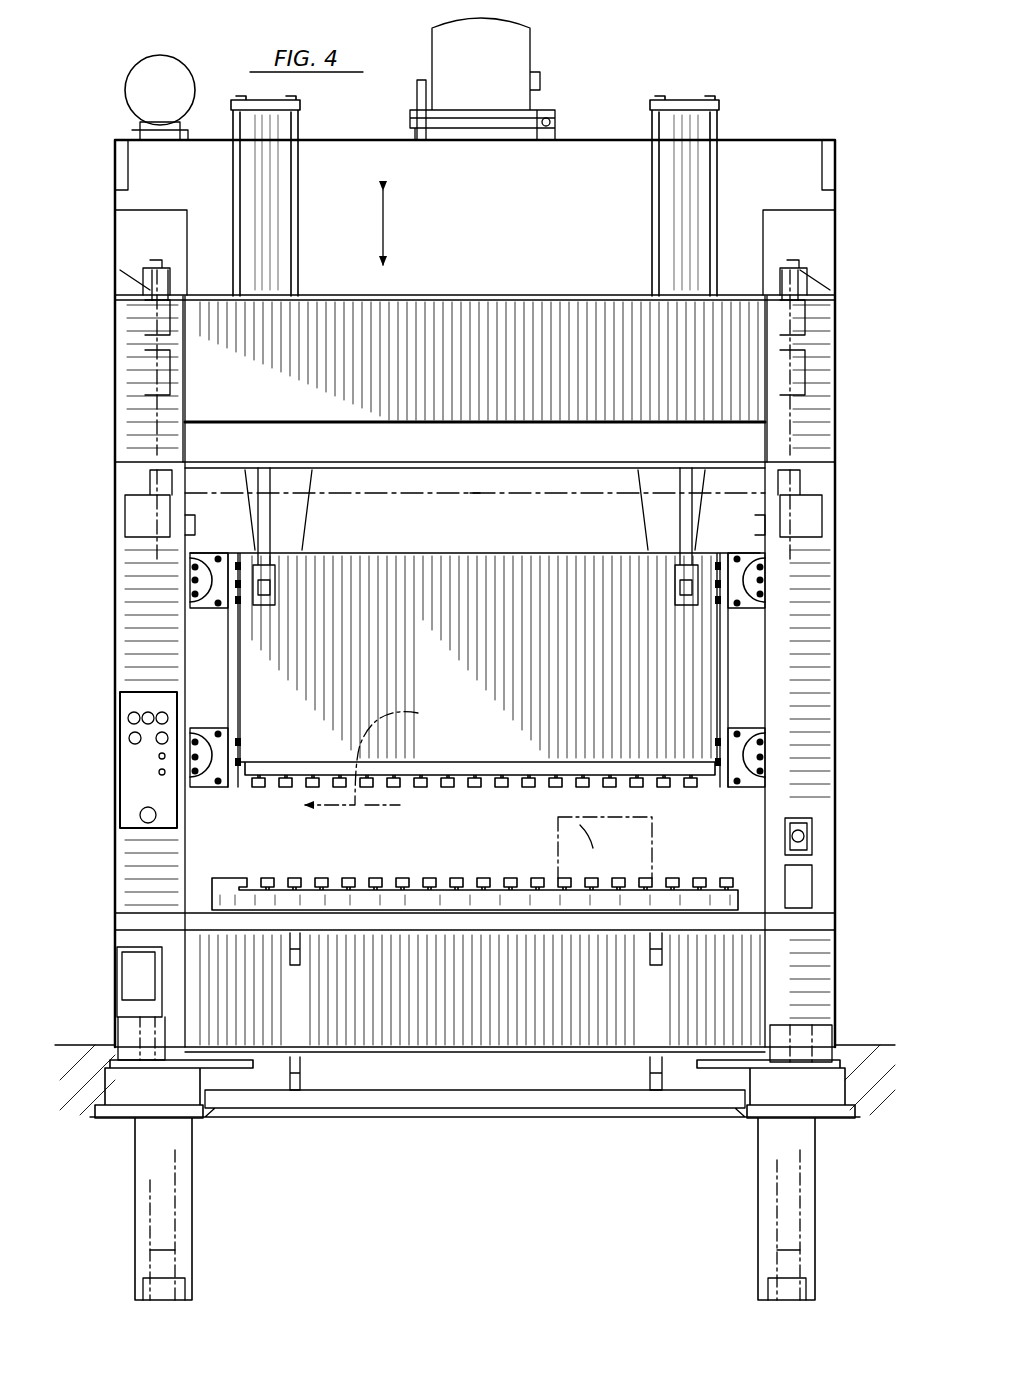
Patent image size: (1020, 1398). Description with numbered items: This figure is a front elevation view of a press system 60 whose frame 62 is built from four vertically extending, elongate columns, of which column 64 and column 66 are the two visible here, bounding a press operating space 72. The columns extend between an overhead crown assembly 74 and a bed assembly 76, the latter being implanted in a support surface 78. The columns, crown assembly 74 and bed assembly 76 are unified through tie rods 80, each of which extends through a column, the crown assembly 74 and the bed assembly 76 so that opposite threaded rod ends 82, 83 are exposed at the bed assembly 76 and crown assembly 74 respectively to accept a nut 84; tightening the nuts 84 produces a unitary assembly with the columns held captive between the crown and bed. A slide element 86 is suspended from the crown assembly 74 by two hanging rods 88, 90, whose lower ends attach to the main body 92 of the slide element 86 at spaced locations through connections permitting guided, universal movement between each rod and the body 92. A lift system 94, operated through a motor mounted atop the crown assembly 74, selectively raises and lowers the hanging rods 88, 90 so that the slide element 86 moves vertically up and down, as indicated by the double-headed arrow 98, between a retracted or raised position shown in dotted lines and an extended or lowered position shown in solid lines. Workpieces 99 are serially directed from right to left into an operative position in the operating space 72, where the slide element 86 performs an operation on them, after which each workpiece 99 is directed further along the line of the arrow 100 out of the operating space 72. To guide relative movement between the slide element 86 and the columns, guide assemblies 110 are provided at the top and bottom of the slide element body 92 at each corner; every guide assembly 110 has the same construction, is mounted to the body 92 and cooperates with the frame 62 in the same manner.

The press system 60 is at (850, 372).
The frame 62 is at (838, 630).
The column 64 is at (130, 612).
The column 66 is at (805, 728).
The press operating space 72 is at (425, 818).
The crown assembly 74 is at (115, 350).
The bed assembly 76 is at (840, 1030).
The support surface 78 is at (65, 1045).
The tie rod 80 is at (165, 265).
The rod end 82 is at (165, 1090).
The rod end 83 is at (150, 282).
The nut 84 is at (138, 265).
The slide element 86 is at (477, 652).
The hanging rod 88 is at (300, 525).
The hanging rod 90 is at (650, 540).
The main body 92 is at (555, 565).
The lift system 94 is at (545, 62).
The double-headed arrow 98 is at (405, 213).
The workpiece 99 is at (560, 818).
The arrow 100 is at (380, 758).
The guide assembly 110 is at (236, 605).